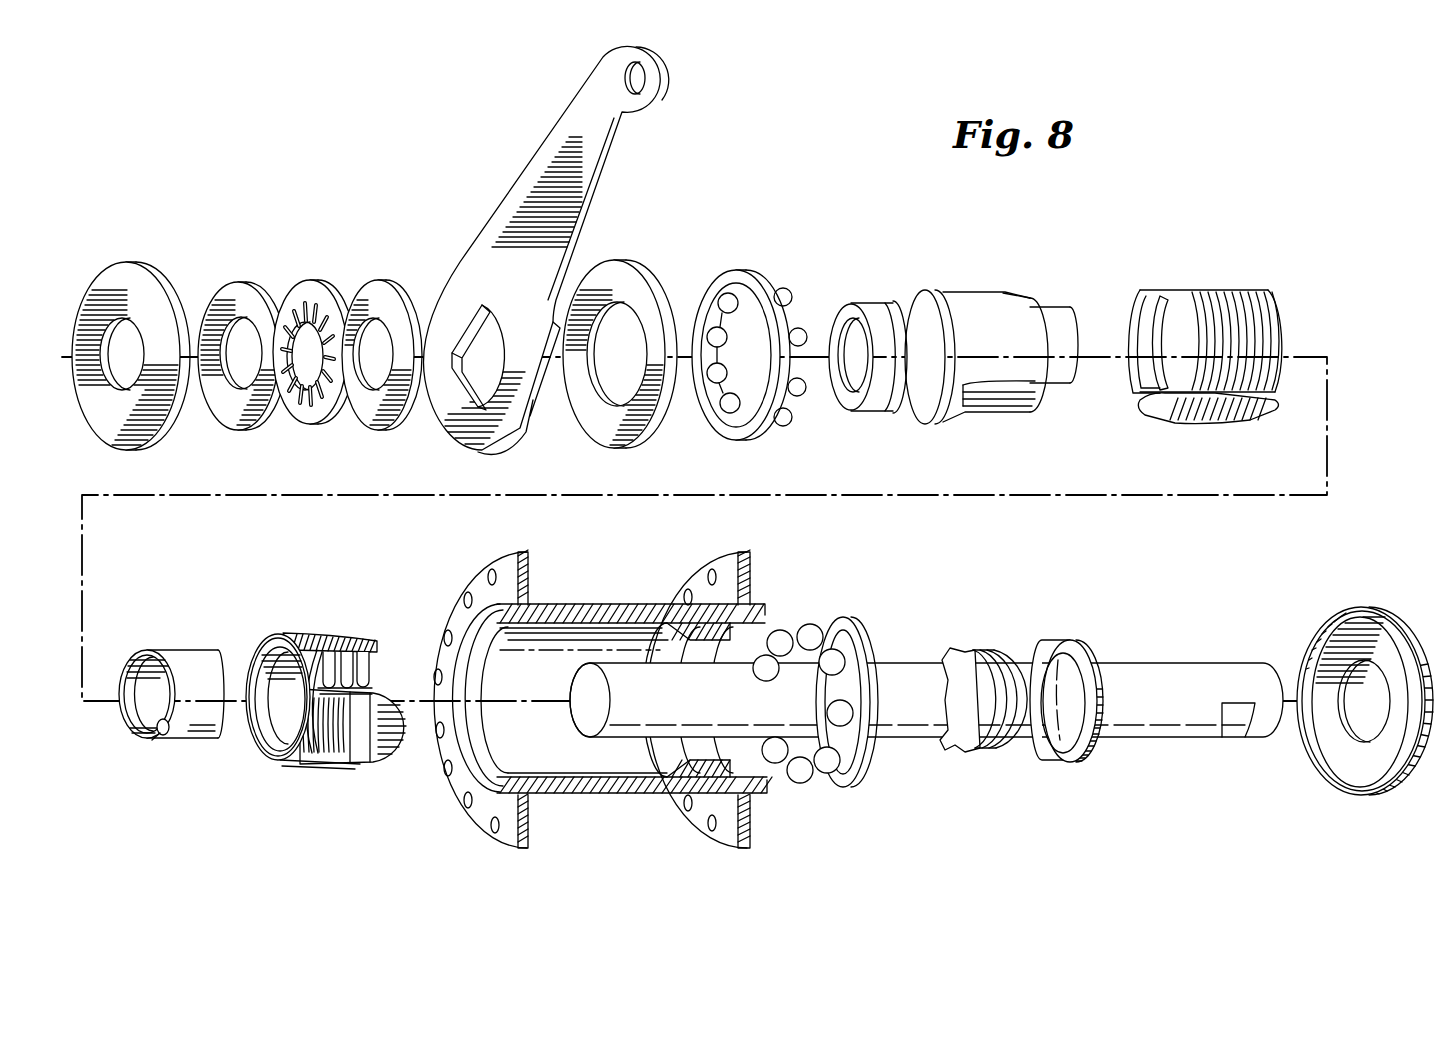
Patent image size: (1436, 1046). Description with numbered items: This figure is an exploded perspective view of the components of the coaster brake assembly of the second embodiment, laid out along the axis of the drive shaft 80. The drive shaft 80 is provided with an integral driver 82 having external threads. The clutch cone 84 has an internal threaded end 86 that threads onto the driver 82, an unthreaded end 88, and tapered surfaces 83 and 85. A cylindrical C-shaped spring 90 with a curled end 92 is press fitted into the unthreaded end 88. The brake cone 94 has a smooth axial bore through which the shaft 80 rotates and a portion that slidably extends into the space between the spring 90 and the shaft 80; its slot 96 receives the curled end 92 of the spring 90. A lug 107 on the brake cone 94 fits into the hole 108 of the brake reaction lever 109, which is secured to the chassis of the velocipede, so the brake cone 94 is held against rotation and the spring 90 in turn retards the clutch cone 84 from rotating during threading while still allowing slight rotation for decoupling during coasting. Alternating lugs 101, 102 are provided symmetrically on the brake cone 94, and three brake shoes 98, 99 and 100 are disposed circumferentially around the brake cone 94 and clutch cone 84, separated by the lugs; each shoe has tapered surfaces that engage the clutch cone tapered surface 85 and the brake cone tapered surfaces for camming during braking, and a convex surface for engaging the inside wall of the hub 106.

The drive shaft 80 is at (1176, 672).
The driver 82 is at (990, 650).
The tapered surface 83 is at (368, 758).
The clutch cone 84 is at (318, 648).
The tapered surface 85 is at (300, 760).
The internal threaded end 86 is at (380, 663).
The unthreaded end 88 is at (330, 697).
The C-shaped spring 90 is at (171, 695).
The curled end 92 is at (153, 738).
The brake cone 94 is at (958, 347).
The slot 96 is at (1050, 392).
The brake shoe 98 is at (1225, 364).
The brake shoe 99 is at (1127, 322).
The brake shoe 100 is at (1147, 415).
The lug 101 is at (1003, 298).
The lug 102 is at (1003, 394).
The hub shell 106 is at (620, 617).
The lug 107 is at (856, 308).
The hole 108 is at (470, 398).
The brake reaction lever 109 is at (522, 253).